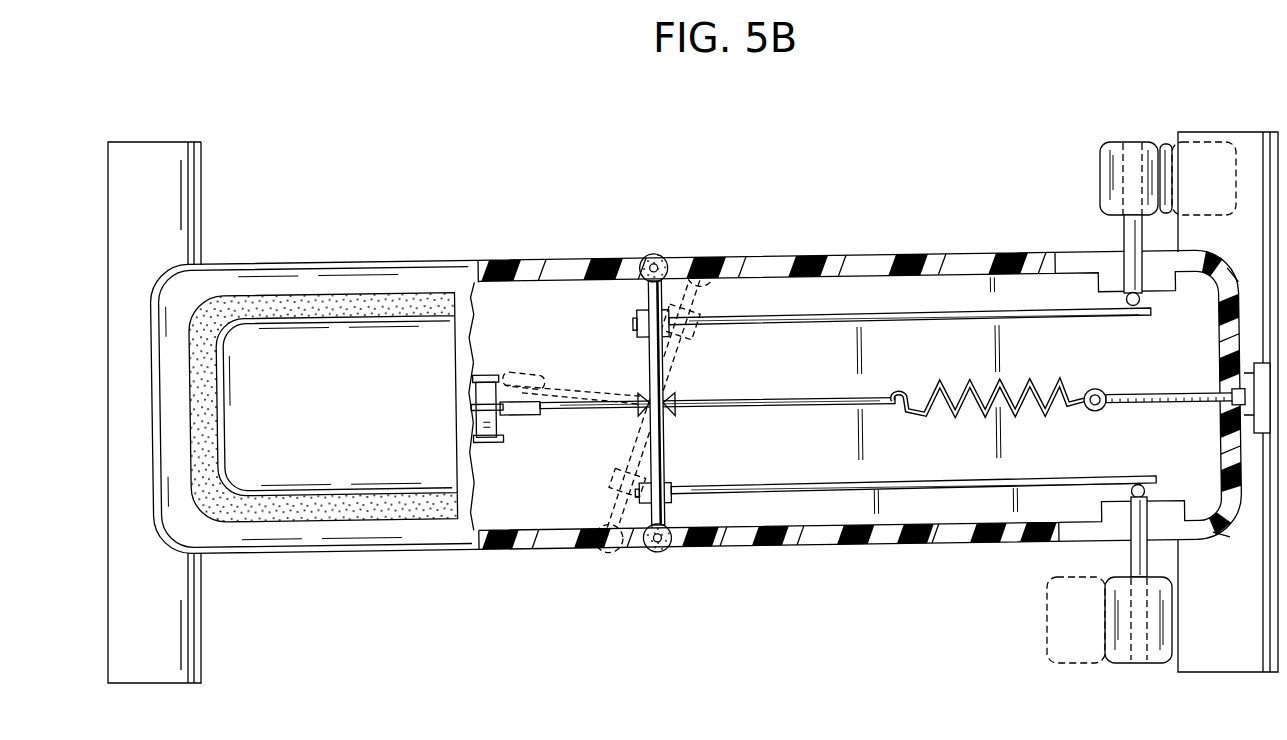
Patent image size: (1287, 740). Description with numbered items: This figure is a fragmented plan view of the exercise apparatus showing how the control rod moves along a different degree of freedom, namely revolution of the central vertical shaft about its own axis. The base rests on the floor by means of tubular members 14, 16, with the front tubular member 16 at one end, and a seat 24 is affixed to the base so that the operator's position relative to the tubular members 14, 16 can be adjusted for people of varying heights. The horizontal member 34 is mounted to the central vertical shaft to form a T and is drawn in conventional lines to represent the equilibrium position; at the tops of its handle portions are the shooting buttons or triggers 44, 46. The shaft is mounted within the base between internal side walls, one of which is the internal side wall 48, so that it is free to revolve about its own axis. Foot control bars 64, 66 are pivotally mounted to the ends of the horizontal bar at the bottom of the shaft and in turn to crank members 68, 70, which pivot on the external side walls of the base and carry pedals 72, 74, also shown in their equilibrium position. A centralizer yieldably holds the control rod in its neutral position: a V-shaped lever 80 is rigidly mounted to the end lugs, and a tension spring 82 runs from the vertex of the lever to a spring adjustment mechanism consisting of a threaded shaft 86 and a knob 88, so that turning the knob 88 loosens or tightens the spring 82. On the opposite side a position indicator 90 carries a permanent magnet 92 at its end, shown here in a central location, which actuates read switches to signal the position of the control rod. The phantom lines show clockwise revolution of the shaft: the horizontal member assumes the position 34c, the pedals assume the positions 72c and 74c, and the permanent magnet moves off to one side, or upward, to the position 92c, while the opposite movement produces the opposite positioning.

The tubular member 14 is at (198, 183).
The front tubular member 16 is at (1254, 135).
The seat 24 is at (196, 366).
The horizontal member 34 is at (650, 300).
The horizontal member position 34c is at (742, 268).
The shooting button or trigger 44 is at (657, 547).
The shooting button or trigger 46 is at (660, 256).
The internal side wall 48 is at (866, 258).
The foot control bar 64 is at (720, 490).
The foot control bar 66 is at (805, 323).
The crank member 68 is at (1132, 560).
The crank member 70 is at (1128, 238).
The pedal 72 is at (1124, 662).
The pedal position 72c is at (1047, 628).
The pedal 74 is at (1133, 142).
The pedal position 74c is at (1208, 148).
The V-shaped lever 80 is at (847, 400).
The tension spring 82 is at (940, 388).
The threaded shaft 86 is at (1158, 395).
The knob 88 is at (1248, 375).
The position indicator 90 is at (600, 385).
The permanent magnet 92 is at (518, 414).
The permanent magnet position 92c is at (530, 372).